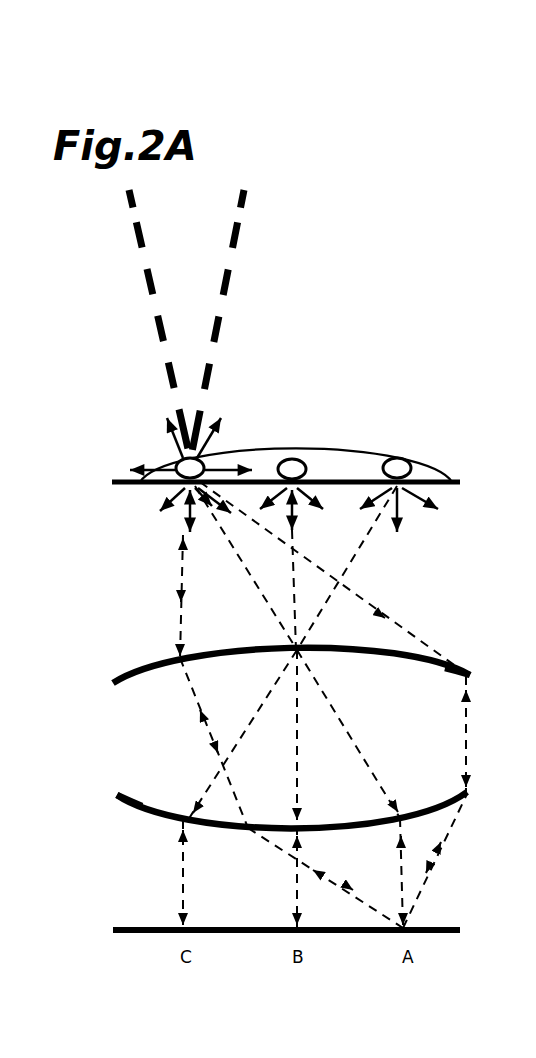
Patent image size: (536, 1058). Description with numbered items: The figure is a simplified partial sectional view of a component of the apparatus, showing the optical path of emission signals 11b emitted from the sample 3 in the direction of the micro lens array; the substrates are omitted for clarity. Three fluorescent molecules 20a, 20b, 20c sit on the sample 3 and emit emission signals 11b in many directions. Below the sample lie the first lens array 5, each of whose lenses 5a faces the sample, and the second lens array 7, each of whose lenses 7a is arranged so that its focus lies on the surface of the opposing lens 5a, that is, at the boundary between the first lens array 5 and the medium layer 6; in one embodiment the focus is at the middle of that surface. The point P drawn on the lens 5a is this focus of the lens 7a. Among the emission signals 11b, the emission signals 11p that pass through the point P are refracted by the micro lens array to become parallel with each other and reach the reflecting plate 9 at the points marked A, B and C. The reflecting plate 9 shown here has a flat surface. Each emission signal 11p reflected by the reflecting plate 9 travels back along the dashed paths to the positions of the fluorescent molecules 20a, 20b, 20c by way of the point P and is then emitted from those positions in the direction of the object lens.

The sample 3 is at (348, 443).
The fluorescent molecule 20a is at (150, 470).
The fluorescent molecule 20b is at (292, 459).
The fluorescent molecule 20c is at (410, 457).
The emission signals 11b is at (162, 510).
The first lens array 5 is at (447, 572).
The lens of the first lens array 5a is at (462, 668).
The point P is at (300, 647).
The medium layer 6 is at (137, 740).
The second lens array 7 is at (450, 858).
The lens of the second lens array 7a is at (125, 793).
The reflecting plate 9 is at (113, 933).
The emission signals passing point P 11p is at (324, 705).